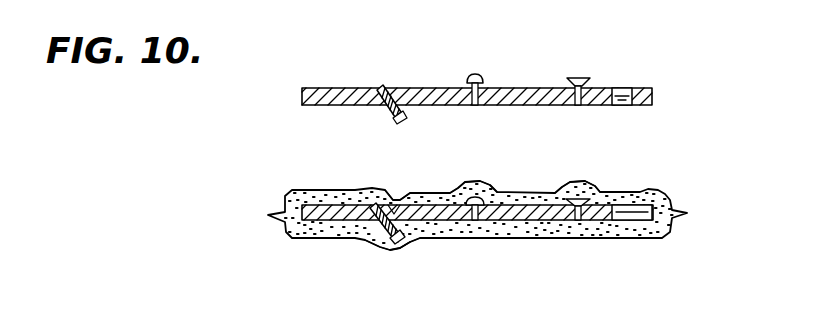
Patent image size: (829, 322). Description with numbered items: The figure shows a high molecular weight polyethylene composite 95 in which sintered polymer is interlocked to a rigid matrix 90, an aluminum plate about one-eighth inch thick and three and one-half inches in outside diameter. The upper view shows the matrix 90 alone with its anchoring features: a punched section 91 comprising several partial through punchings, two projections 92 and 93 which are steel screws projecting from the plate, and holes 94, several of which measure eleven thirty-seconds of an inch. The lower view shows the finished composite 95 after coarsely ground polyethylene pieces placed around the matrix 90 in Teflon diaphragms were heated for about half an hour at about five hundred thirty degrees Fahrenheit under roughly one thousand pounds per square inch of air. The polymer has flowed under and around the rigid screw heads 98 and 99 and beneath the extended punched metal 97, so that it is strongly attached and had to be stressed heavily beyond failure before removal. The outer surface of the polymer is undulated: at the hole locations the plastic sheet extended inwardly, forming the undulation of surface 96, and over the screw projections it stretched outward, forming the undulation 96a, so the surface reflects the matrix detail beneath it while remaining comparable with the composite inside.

In FIG. 10, the rigid matrix 90 is at (348, 83).
In FIG. 10, the punched section 91 is at (397, 92).
In FIG. 10a, the punched section 91 is at (400, 203).
In FIG. 10, the projection 92 is at (478, 72).
In FIG. 10, the projection 93 is at (582, 72).
In FIG. 10, the holes 94 is at (623, 88).
In FIG. 10a, the composite 95 is at (328, 188).
In FIG. 10a, the undulation of surface at hole locations 96 is at (389, 195).
In FIG. 10a, the undulation of surface over screw projections 96a is at (412, 290).
In FIG. 10a, the extended punched metal 97 is at (407, 247).
In FIG. 10a, the rigid screw head 98 is at (490, 192).
In FIG. 10a, the rigid screw head 99 is at (593, 192).